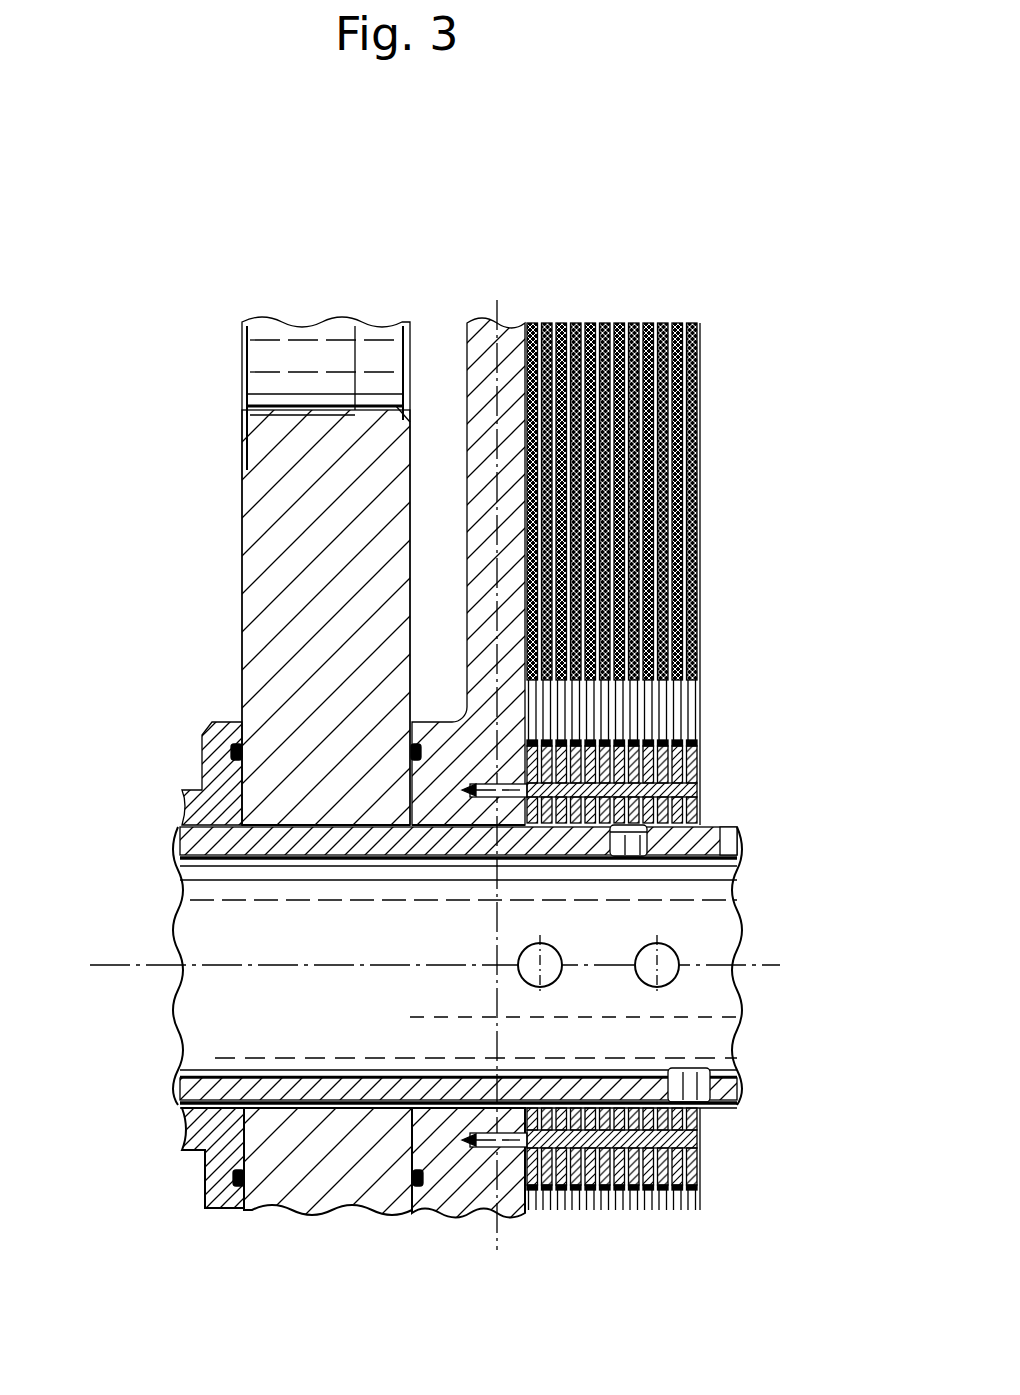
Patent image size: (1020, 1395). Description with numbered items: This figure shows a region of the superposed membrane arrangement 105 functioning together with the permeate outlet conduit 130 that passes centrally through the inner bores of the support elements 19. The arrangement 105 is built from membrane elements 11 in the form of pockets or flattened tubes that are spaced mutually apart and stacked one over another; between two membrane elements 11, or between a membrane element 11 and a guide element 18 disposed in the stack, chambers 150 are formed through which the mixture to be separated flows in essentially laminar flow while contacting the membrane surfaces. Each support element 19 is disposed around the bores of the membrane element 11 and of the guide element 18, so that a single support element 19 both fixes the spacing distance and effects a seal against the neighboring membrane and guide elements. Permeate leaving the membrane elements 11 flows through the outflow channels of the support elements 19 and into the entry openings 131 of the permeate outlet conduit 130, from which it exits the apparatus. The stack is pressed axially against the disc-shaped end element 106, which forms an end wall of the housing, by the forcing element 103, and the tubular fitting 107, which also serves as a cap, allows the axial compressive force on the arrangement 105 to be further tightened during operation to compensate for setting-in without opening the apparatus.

The arrangement of superposed membrane elements 105 is at (681, 502).
The chamber for the mixture of materials 150 is at (690, 548).
The membrane element 11 is at (700, 695).
The guide element 18 is at (688, 717).
The support element 19 is at (695, 778).
The forcing element 103 is at (488, 520).
The end element 106 is at (293, 615).
The tubular fitting 107 is at (225, 810).
The permeate outlet conduit 130 is at (690, 852).
The entry openings 131 is at (665, 985).